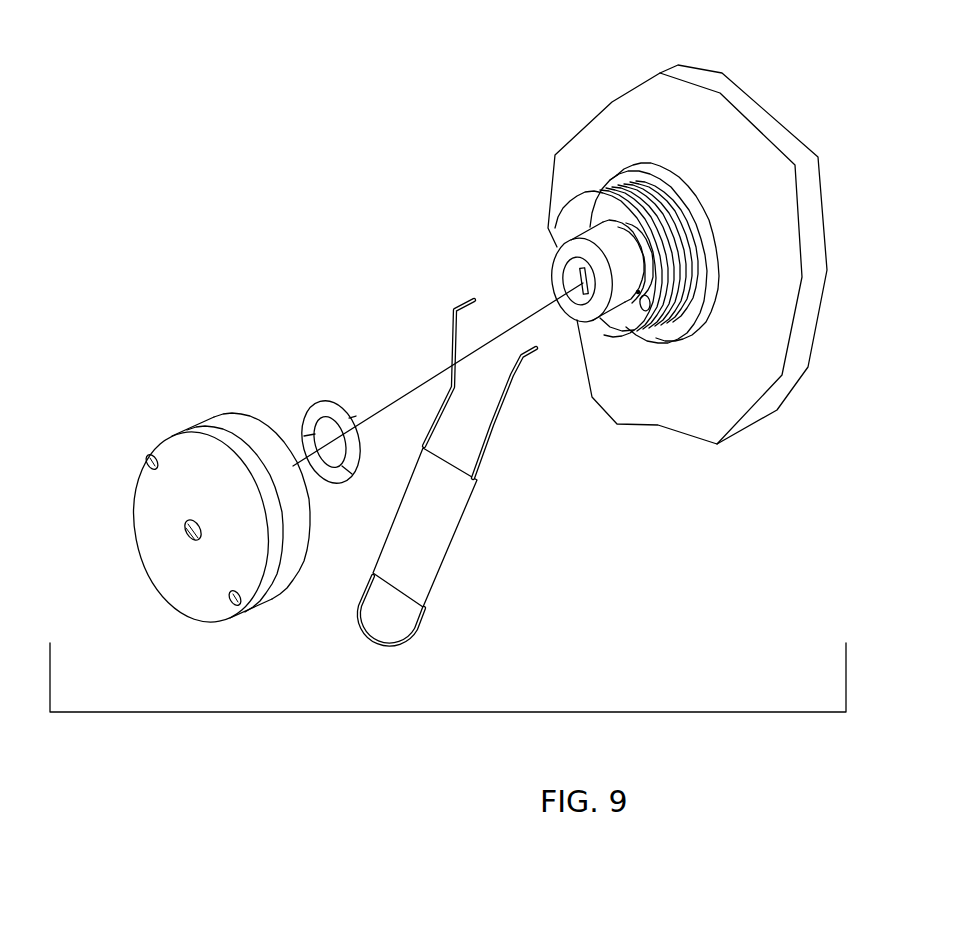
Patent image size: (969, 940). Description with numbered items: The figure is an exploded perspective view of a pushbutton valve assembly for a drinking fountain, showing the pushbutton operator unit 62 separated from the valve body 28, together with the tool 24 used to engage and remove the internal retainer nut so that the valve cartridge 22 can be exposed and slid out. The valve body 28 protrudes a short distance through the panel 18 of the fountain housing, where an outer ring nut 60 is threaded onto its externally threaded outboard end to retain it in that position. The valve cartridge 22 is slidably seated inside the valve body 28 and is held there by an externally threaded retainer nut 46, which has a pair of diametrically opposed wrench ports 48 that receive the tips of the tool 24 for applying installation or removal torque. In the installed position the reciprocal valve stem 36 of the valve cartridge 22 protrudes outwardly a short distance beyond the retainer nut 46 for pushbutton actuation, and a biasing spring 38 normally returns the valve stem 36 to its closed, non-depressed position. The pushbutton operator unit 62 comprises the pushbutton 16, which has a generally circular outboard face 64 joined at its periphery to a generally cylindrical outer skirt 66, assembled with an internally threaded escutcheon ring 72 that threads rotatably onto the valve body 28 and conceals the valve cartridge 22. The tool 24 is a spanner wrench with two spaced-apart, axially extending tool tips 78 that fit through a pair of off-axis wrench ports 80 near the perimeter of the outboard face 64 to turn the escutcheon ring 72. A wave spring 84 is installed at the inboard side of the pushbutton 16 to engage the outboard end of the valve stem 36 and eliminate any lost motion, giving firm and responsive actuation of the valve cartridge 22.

The pushbutton 16 is at (198, 521).
The panel 18 is at (658, 97).
The valve cartridge 22 is at (622, 328).
The tool 24 is at (460, 456).
The valve body 28 is at (643, 203).
The valve stem 36 is at (560, 258).
The biasing spring 38 is at (638, 292).
The retainer nut 46 is at (598, 213).
The wrench ports 48 is at (576, 234).
The outer ring nut 60 is at (702, 332).
The pushbutton operator unit 62 is at (165, 401).
The outboard face 64 is at (138, 508).
The outer skirt 66 is at (257, 593).
The escutcheon ring 72 is at (233, 427).
The tool tips 78 is at (467, 300).
The wrench ports 80 is at (157, 464).
The wave spring 84 is at (320, 400).